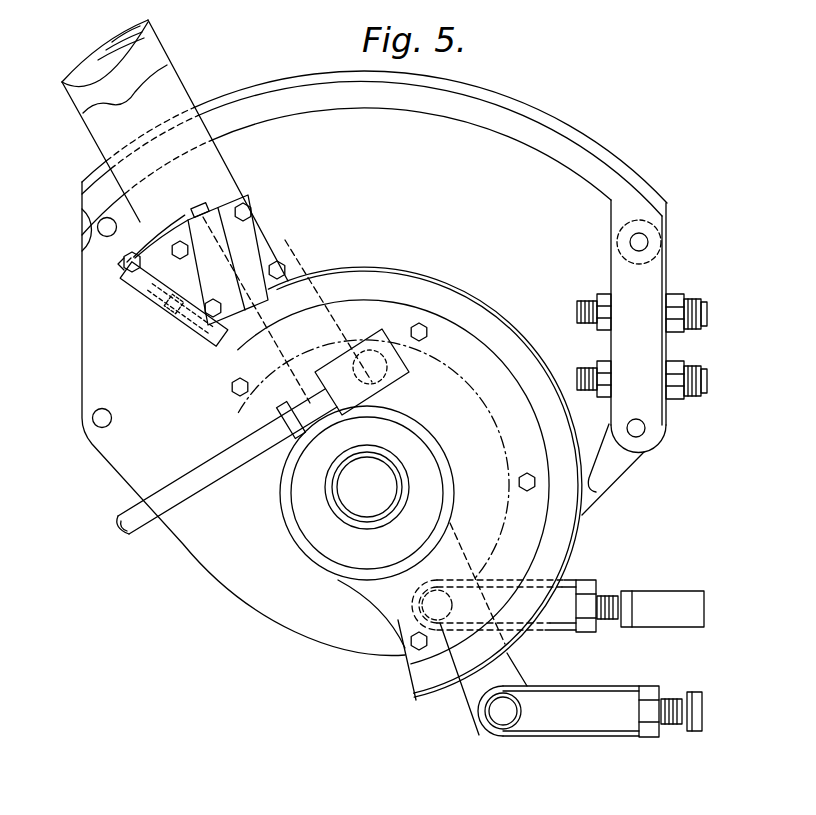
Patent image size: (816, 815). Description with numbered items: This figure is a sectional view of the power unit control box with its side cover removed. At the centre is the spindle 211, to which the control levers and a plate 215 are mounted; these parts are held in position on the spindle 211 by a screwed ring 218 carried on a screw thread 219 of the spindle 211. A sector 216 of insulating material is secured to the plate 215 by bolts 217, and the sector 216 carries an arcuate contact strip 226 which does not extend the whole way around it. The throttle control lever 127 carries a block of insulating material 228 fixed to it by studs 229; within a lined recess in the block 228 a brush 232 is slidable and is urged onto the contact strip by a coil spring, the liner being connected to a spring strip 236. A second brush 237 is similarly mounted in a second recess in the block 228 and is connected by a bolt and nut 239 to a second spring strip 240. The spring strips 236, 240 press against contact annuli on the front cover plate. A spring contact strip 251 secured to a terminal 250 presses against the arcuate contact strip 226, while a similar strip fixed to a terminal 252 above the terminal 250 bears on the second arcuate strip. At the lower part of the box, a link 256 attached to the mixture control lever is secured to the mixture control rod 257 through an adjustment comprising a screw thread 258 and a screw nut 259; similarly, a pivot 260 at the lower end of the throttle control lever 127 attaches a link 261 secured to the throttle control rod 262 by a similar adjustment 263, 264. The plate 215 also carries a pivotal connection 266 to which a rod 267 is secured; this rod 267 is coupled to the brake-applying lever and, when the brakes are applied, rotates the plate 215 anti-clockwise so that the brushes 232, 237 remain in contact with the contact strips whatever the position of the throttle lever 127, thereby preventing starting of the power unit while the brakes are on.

The throttle control lever 127 is at (163, 80).
The studs 229 is at (248, 195).
The block of insulating material 228 is at (252, 224).
The spring strip 236 is at (240, 262).
The brush 232 is at (258, 285).
The second brush 237 is at (190, 325).
The nut 239 is at (127, 262).
The second spring strip 240 is at (200, 365).
The arcuate contact strip 226 is at (416, 272).
The sector of insulating material 216 is at (489, 329).
The plate 215 is at (373, 460).
The bolts 217 is at (421, 342).
The pivotal connection 266 is at (329, 372).
The rod 267 is at (173, 492).
The screwed ring 218 is at (367, 493).
The screw thread 219 is at (398, 457).
The spindle 211 is at (340, 462).
The terminal 252 is at (668, 292).
The terminal 250 is at (669, 400).
The spring contact strip 251 is at (597, 454).
The link 256 is at (556, 614).
The screw nut 259 is at (587, 604).
The screw thread 258 is at (616, 594).
The mixture control rod 257 is at (644, 619).
The pivot 260 is at (502, 711).
The link 261 is at (577, 717).
The adjustment 264 is at (651, 711).
The adjustment 263 is at (667, 724).
The throttle control rod 262 is at (694, 731).